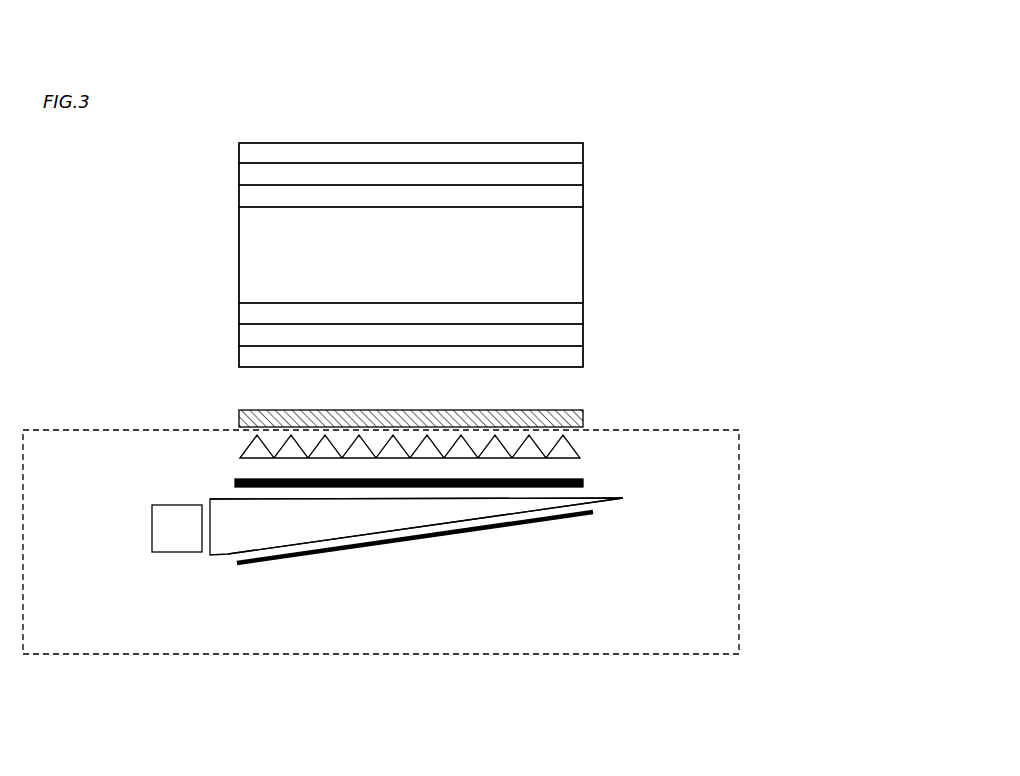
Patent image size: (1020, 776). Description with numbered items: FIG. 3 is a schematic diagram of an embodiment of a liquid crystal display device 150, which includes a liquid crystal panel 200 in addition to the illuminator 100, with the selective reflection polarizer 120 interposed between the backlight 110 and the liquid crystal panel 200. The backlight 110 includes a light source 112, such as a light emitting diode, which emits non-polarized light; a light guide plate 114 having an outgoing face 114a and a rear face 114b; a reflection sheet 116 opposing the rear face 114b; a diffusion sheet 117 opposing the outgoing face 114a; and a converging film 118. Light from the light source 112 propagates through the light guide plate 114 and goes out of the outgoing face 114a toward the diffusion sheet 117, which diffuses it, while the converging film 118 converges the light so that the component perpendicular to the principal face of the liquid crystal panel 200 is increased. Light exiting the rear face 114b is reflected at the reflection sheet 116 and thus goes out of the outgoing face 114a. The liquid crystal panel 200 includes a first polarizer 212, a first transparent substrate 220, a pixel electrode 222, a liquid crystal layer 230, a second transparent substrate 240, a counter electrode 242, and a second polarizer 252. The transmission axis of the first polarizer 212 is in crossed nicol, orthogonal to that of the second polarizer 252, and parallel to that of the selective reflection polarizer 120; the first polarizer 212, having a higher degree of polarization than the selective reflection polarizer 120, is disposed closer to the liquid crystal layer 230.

The illuminator 100 is at (442, 567).
The backlight 110 is at (503, 655).
The light source 112 is at (158, 527).
The light guide plate 114 is at (213, 556).
The outgoing face 114a is at (219, 498).
The rear face 114b is at (226, 557).
The reflection sheet 116 is at (507, 528).
The diffusion sheet 117 is at (586, 482).
The converging film 118 is at (580, 446).
The selective reflection polarizer 120 is at (586, 417).
The liquid crystal display device 150 is at (664, 96).
The liquid crystal panel 200 is at (170, 266).
The first polarizer 212 is at (576, 358).
The first transparent substrate 220 is at (576, 336).
The pixel electrode 222 is at (576, 311).
The liquid crystal layer 230 is at (572, 257).
The second transparent substrate 240 is at (576, 177).
The counter electrode 242 is at (576, 198).
The second polarizer 252 is at (576, 154).